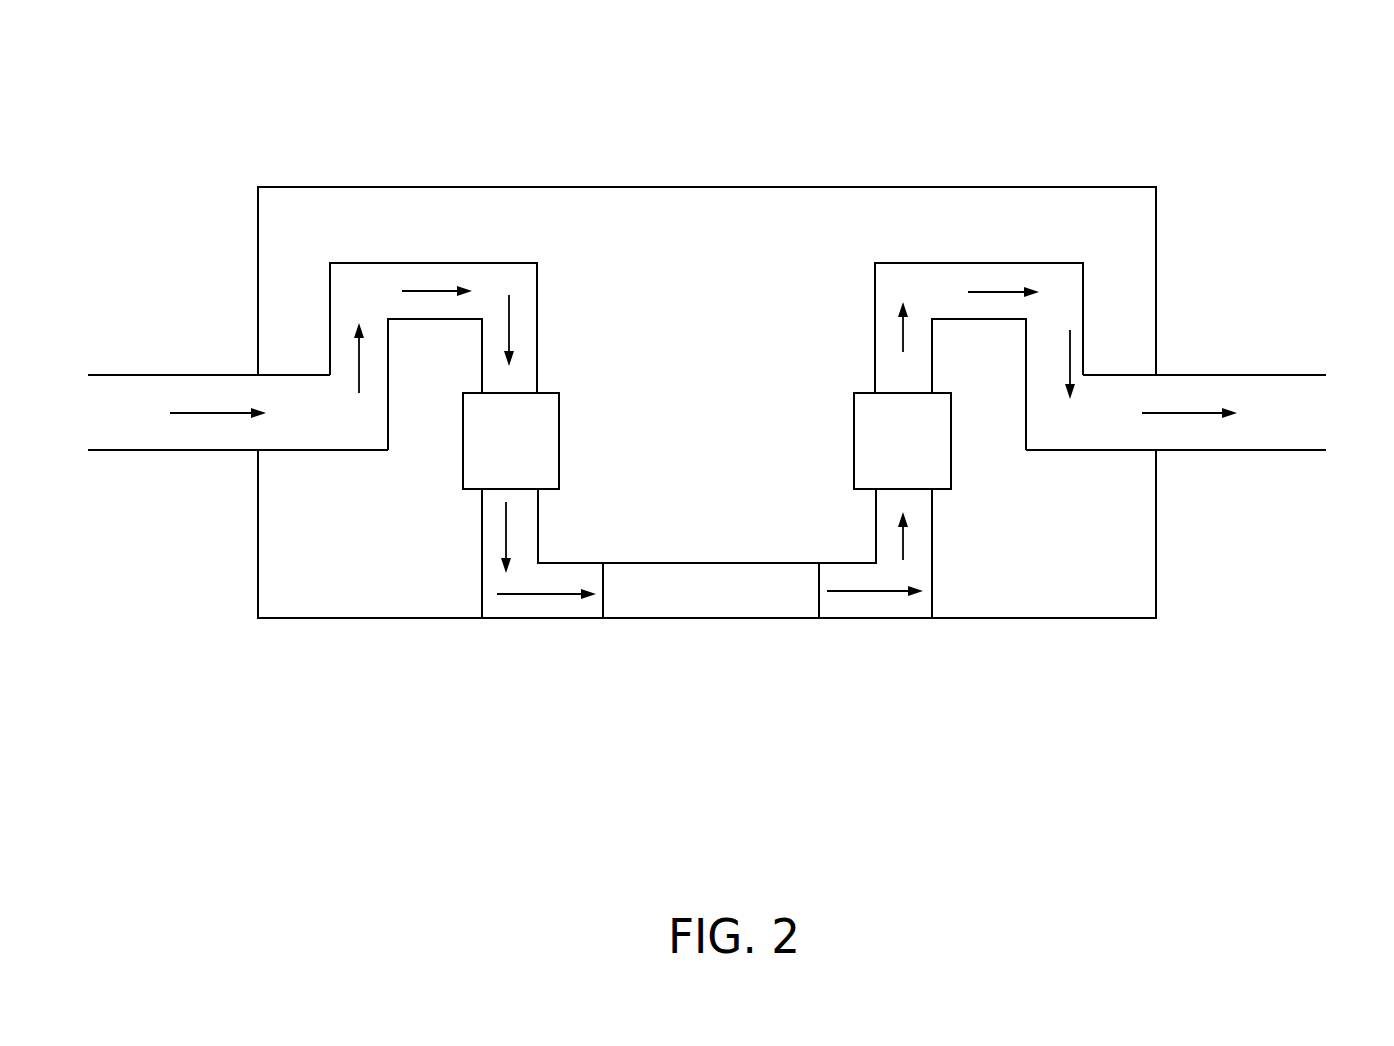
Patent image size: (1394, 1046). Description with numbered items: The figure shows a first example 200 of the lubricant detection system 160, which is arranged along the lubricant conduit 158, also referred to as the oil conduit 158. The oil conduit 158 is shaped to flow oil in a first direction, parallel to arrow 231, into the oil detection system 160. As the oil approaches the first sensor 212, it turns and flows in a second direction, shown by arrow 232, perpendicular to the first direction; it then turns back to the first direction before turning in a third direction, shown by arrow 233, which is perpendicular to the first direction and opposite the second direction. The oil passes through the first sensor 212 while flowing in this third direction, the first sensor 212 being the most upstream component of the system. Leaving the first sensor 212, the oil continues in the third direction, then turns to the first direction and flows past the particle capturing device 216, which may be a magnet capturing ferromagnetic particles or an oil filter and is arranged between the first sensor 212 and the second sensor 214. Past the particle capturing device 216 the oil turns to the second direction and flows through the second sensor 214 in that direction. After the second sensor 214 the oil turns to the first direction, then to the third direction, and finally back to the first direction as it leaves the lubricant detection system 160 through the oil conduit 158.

The first example of the lubricant detection system 200 is at (1312, 66).
The lubricant detection system 160 is at (1165, 181).
The lubricant conduit 158 is at (202, 375).
The first sensor 212 is at (559, 393).
The second sensor 214 is at (854, 393).
The particle capturing device 216 is at (603, 618).
The arrow 231 is at (215, 413).
The arrow 232 is at (359, 360).
The arrow 233 is at (509, 326).